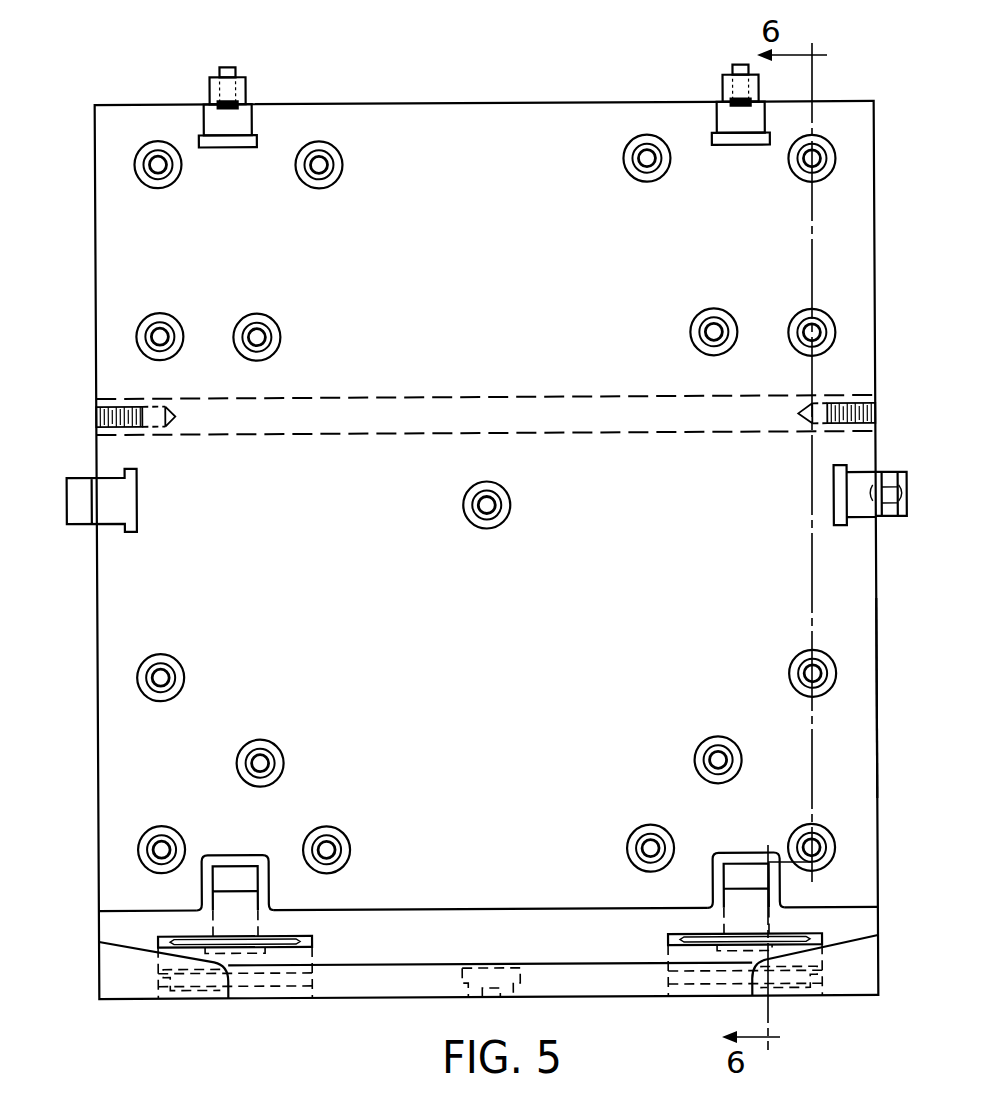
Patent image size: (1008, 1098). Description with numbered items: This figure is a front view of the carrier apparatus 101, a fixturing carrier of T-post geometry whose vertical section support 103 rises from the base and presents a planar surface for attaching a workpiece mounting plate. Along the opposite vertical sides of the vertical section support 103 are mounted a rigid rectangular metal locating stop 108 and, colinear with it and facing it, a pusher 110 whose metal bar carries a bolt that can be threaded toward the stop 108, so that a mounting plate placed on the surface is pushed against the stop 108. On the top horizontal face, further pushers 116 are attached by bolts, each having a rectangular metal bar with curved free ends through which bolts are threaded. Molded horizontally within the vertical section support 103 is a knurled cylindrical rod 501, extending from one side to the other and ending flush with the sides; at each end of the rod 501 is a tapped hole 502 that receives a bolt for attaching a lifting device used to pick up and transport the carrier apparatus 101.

The carrier apparatus 101 is at (884, 255).
The vertical section support 103 is at (875, 707).
The locating stop 108 is at (85, 516).
The pusher 110 is at (898, 517).
The pusher 116 is at (252, 72).
The knurled cylindrical rod 501 is at (849, 397).
The tapped hole 502 is at (874, 410).